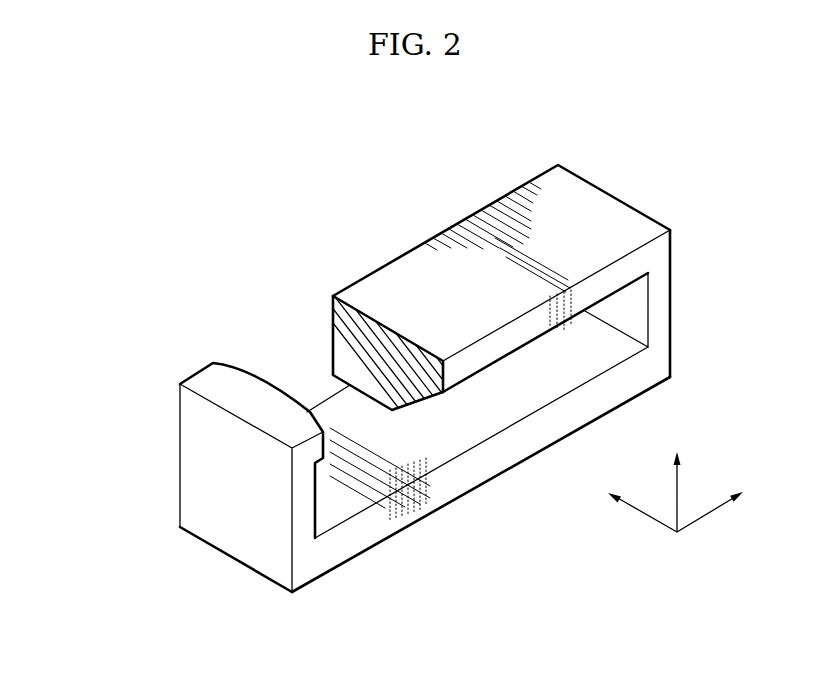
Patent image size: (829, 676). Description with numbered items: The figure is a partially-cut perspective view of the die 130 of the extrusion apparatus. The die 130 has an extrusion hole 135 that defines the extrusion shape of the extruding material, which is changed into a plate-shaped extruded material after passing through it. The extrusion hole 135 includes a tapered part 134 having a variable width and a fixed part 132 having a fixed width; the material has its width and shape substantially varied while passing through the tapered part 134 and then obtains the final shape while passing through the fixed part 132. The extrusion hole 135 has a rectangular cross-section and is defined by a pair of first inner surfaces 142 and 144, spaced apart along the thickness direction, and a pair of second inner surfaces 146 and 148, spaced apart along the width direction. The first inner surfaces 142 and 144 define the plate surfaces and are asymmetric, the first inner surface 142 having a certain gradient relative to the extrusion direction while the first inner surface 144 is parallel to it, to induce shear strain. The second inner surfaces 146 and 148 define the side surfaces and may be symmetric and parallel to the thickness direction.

The die 130 is at (165, 340).
The fixed part 132 is at (345, 408).
The tapered part 134 is at (497, 390).
The extrusion hole 135 is at (317, 196).
The first inner surface 142 is at (413, 397).
The first inner surface 144 is at (443, 438).
The second inner surface 146 is at (320, 496).
The second inner surface 148 is at (637, 299).